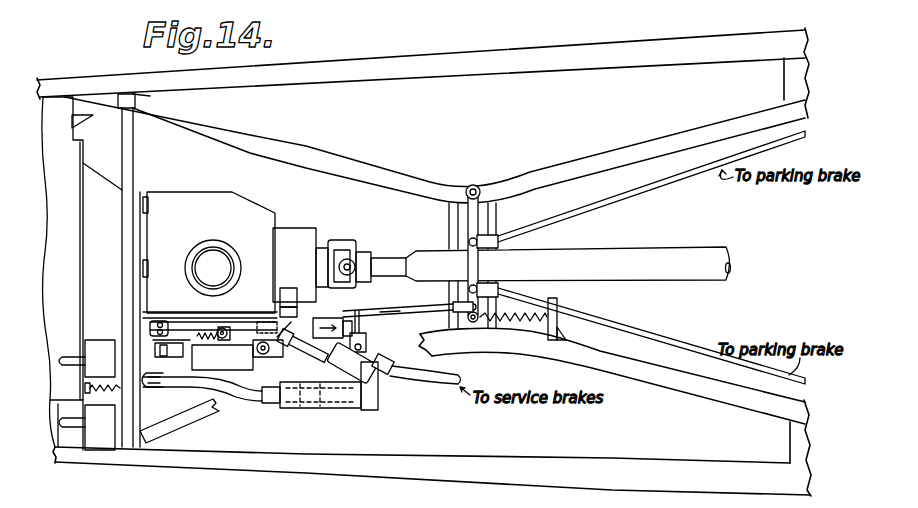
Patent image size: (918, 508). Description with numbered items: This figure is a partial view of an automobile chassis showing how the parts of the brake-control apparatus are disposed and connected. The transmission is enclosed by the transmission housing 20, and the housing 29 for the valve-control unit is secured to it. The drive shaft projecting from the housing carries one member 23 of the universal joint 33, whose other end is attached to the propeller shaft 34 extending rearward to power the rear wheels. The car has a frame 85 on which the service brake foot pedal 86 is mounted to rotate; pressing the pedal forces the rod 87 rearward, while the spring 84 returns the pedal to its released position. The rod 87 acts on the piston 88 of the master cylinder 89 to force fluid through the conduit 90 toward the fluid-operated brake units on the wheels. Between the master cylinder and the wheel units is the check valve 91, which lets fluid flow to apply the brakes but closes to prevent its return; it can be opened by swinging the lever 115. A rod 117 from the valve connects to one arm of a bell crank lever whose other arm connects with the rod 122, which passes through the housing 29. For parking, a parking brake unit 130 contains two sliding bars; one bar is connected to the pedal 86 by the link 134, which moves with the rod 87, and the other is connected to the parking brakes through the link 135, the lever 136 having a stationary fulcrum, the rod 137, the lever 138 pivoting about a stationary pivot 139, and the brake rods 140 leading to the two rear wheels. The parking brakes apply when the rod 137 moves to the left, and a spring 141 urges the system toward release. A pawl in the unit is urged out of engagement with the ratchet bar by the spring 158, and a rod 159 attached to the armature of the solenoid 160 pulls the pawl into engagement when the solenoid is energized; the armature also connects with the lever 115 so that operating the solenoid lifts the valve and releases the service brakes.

The transmission housing 20 is at (248, 194).
The member of the universal joint 23 is at (339, 238).
The housing 29 is at (292, 229).
The universal joint 33 is at (361, 241).
The propeller shaft 34 is at (396, 253).
The spring 84 is at (85, 389).
The frame 85 is at (366, 167).
The service brake foot pedal 86 is at (83, 333).
The rod 87 is at (254, 398).
The piston 88 is at (318, 409).
The master cylinder 89 is at (350, 411).
The conduit 90 is at (429, 388).
The check valve 91 is at (341, 368).
The lever 115 is at (361, 352).
The rod 117 is at (307, 345).
The rod 122 is at (282, 363).
The parking brake unit 130 is at (227, 406).
The link 134 is at (163, 381).
The link 135 is at (173, 350).
The lever 136 is at (143, 338).
The rod 137 is at (400, 309).
The lever 138 is at (463, 303).
The stationary pivot 139 is at (476, 187).
The brake rods 140 is at (607, 200).
The spring 141 is at (548, 300).
The spring 158 is at (214, 333).
The rod 159 is at (223, 357).
The solenoid 160 is at (360, 311).